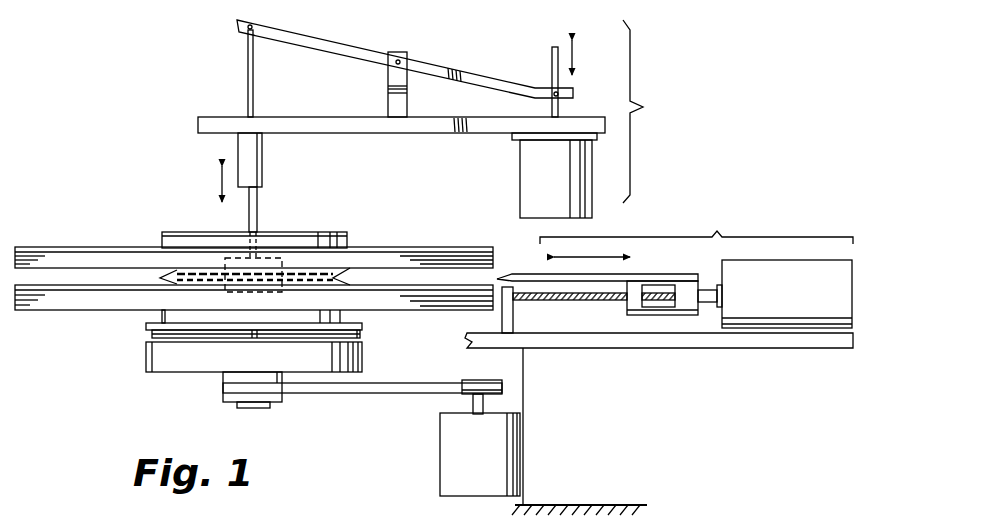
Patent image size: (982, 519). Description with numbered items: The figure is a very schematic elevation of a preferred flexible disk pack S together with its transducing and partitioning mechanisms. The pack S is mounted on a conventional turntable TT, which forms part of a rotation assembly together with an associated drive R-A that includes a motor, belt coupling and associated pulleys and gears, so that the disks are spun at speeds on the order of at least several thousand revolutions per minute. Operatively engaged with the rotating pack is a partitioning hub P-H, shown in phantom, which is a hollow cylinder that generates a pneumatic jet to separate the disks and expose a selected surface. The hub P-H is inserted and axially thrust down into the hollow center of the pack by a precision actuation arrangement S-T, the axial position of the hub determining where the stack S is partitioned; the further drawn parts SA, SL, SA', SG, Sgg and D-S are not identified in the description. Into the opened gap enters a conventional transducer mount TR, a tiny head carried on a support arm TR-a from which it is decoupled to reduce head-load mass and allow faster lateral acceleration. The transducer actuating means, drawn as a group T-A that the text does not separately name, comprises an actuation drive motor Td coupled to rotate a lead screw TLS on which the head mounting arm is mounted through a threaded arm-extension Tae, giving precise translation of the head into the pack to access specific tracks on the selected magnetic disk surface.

The precision actuation arrangement S-T is at (440, 119).
The sensing arm SA is at (222, 73).
The sensing lever SL is at (306, 40).
The second sensing arm SA' is at (530, 72).
The sensing gauge SG is at (262, 165).
The gauge stylus Sgg is at (285, 214).
The partitioning hub P-H is at (272, 256).
The disc spindle hub D-S is at (162, 238).
The flexible disk pack S is at (78, 246).
The turntable TT is at (146, 328).
The drive R-A is at (432, 406).
The translation assembly T-A is at (659, 275).
The transducer mount TR is at (508, 278).
The support arm TR-a is at (631, 273).
The lead screw TLS is at (592, 301).
The arm-extension Tae is at (668, 316).
The actuation drive motor Td is at (797, 322).